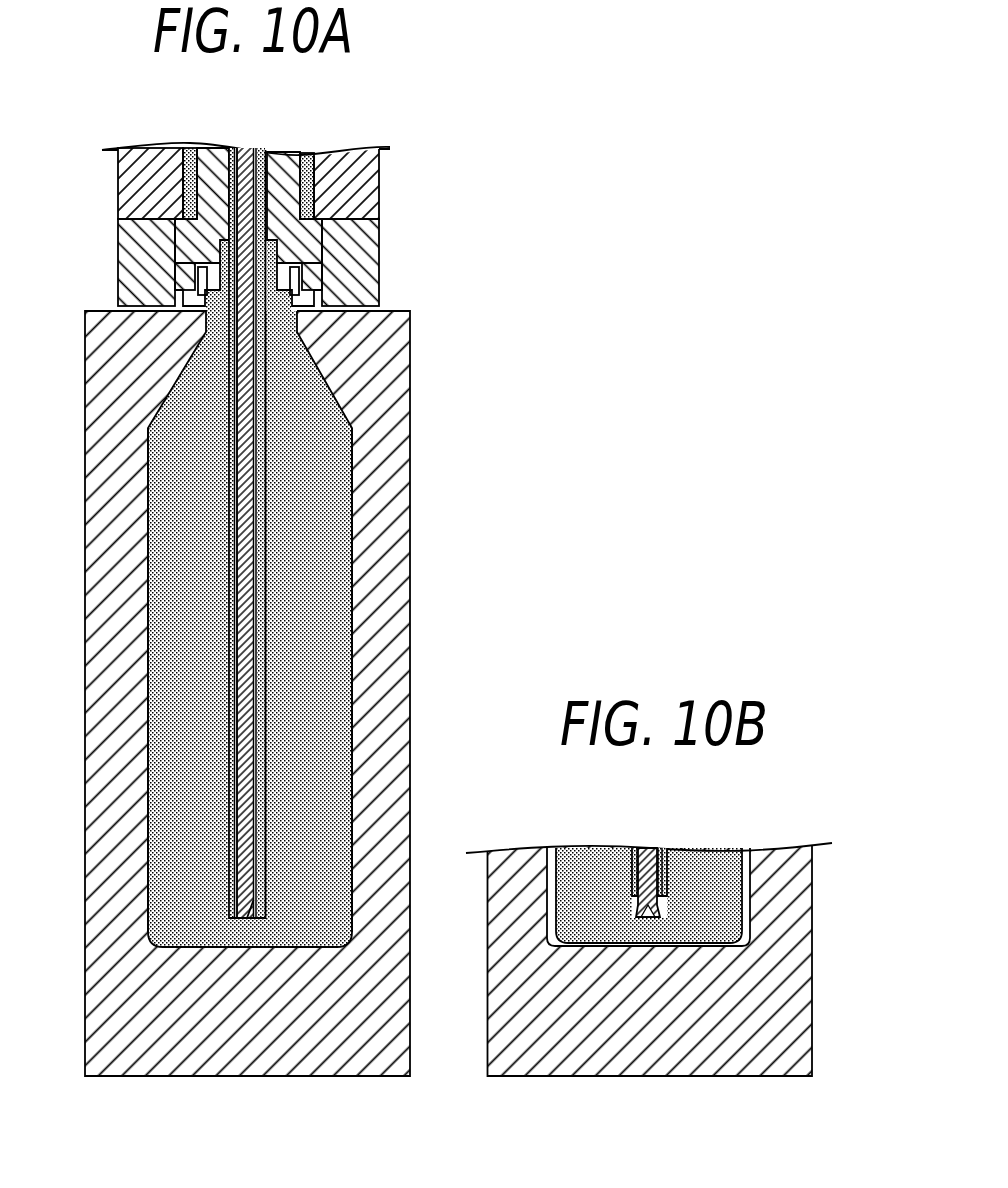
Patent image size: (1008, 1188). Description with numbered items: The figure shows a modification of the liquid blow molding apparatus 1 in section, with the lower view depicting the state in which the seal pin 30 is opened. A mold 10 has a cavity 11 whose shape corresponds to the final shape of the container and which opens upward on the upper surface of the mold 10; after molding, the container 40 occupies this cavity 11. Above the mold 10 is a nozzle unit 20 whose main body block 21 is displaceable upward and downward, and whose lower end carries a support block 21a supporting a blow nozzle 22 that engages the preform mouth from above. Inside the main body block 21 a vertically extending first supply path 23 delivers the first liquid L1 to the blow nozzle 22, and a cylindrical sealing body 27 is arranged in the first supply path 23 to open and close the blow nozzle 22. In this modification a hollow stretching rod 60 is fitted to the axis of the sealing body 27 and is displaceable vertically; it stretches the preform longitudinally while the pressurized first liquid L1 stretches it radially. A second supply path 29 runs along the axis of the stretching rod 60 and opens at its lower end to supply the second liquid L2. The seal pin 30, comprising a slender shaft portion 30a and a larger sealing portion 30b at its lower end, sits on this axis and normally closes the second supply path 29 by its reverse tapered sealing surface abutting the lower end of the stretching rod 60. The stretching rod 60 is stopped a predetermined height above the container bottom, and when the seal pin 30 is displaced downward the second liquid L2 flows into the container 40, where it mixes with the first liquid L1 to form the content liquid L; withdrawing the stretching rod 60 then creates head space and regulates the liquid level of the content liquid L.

In FIG. 10A, the liquid blow molding apparatus 1 is at (434, 139).
In FIG. 10A, the mold 10 is at (415, 800).
In FIG. 10B, the mold 10 is at (816, 988).
In FIG. 10A, the cavity 11 is at (352, 880).
In FIG. 10B, the cavity 11 is at (750, 905).
In FIG. 10A, the nozzle unit 20 is at (251, 201).
In FIG. 10A, the main body block 21 is at (145, 156).
In FIG. 10A, the support block 21a is at (133, 260).
In FIG. 10A, the blow nozzle 22 is at (310, 242).
In FIG. 10A, the first supply path 23 is at (305, 162).
In FIG. 10A, the sealing body 27 is at (205, 176).
In FIG. 10A, the second supply path 29 is at (257, 693).
In FIG. 10B, the second supply path 29 is at (660, 857).
In FIG. 10A, the seal pin 30 is at (335, 639).
In FIG. 10B, the seal pin 30 is at (659, 952).
In FIG. 10A, the shaft portion 30a is at (253, 753).
In FIG. 10B, the shaft portion 30a is at (647, 845).
In FIG. 10A, the sealing portion 30b is at (258, 920).
In FIG. 10B, the sealing portion 30b is at (655, 918).
In FIG. 10A, the container 40 is at (355, 648).
In FIG. 10B, the container 40 is at (746, 880).
In FIG. 10A, the stretching rod 60 is at (337, 639).
In FIG. 10B, the stretching rod 60 is at (635, 952).
In FIG. 10A, the first liquid L1 is at (312, 477).
In FIG. 10A, the second liquid L2 is at (258, 603).
In FIG. 10B, the second liquid L2 is at (693, 852).
In FIG. 10B, the liquid L is at (585, 910).